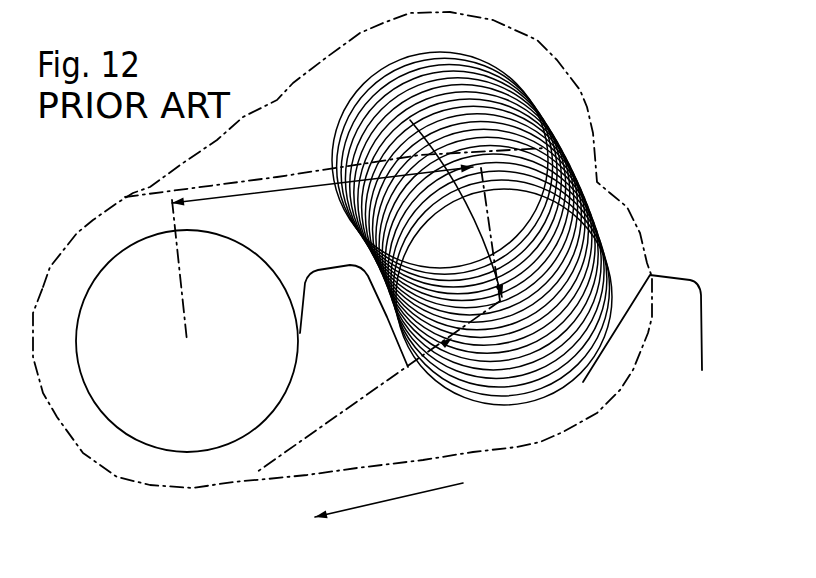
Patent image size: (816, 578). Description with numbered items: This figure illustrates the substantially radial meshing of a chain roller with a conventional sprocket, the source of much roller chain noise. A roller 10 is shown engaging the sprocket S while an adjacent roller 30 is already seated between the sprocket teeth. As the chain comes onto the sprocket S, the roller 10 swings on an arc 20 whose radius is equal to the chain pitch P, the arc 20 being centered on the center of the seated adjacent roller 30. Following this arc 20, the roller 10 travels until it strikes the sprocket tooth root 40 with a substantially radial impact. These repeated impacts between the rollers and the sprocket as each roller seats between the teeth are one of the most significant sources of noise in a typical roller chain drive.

The roller 10 is at (540, 100).
The arc 20 is at (456, 210).
The seated adjacent roller 30 is at (117, 397).
The sprocket tooth root 40 is at (545, 400).
The chain pitch P is at (322, 194).
The sprocket S is at (335, 445).